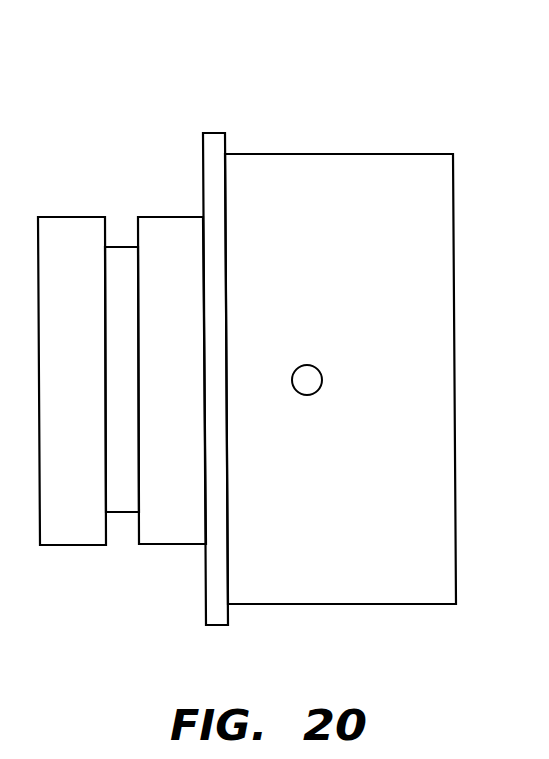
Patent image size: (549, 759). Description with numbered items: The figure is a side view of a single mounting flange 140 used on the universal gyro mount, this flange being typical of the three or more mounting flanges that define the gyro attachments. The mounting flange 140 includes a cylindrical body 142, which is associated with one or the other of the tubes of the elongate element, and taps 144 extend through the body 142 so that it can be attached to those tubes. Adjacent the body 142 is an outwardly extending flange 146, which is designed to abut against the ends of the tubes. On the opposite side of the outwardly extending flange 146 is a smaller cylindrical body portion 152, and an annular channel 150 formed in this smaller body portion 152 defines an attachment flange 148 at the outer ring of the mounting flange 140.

The mounting flange 140 is at (290, 111).
The cylindrical body 142 is at (413, 152).
The taps 144 is at (306, 392).
The outwardly extending flange 146 is at (213, 131).
The attachment flange 148 is at (68, 216).
The annular channel 150 is at (118, 247).
The smaller cylindrical body portion 152 is at (167, 530).